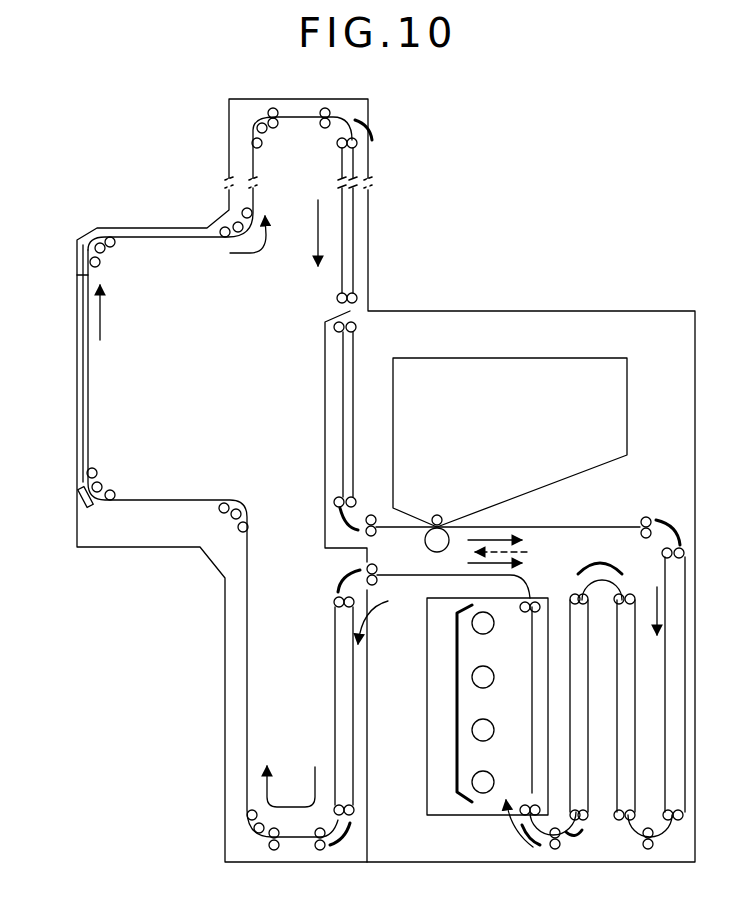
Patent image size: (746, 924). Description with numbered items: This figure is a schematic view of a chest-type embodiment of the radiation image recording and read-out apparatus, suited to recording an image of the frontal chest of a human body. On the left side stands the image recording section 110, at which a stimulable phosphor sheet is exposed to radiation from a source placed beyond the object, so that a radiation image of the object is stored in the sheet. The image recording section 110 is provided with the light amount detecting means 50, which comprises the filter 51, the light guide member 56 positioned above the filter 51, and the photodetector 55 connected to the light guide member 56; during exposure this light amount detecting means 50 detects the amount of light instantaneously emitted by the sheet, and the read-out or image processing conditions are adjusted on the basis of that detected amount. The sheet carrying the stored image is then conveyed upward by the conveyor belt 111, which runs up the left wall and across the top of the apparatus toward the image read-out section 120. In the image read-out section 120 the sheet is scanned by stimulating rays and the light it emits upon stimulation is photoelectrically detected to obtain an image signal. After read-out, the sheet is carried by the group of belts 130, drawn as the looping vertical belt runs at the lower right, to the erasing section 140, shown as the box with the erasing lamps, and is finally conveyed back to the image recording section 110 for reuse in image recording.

The light amount detecting means 50 is at (95, 520).
The filter 51 is at (84, 364).
The photodetector 55 is at (78, 500).
The light guide member 56 is at (82, 399).
The image recording section 110 is at (71, 426).
The conveyor belt 111 is at (77, 275).
The image read-out section 120 is at (451, 506).
The group of belts 130 is at (603, 826).
The erasing section 140 is at (447, 693).